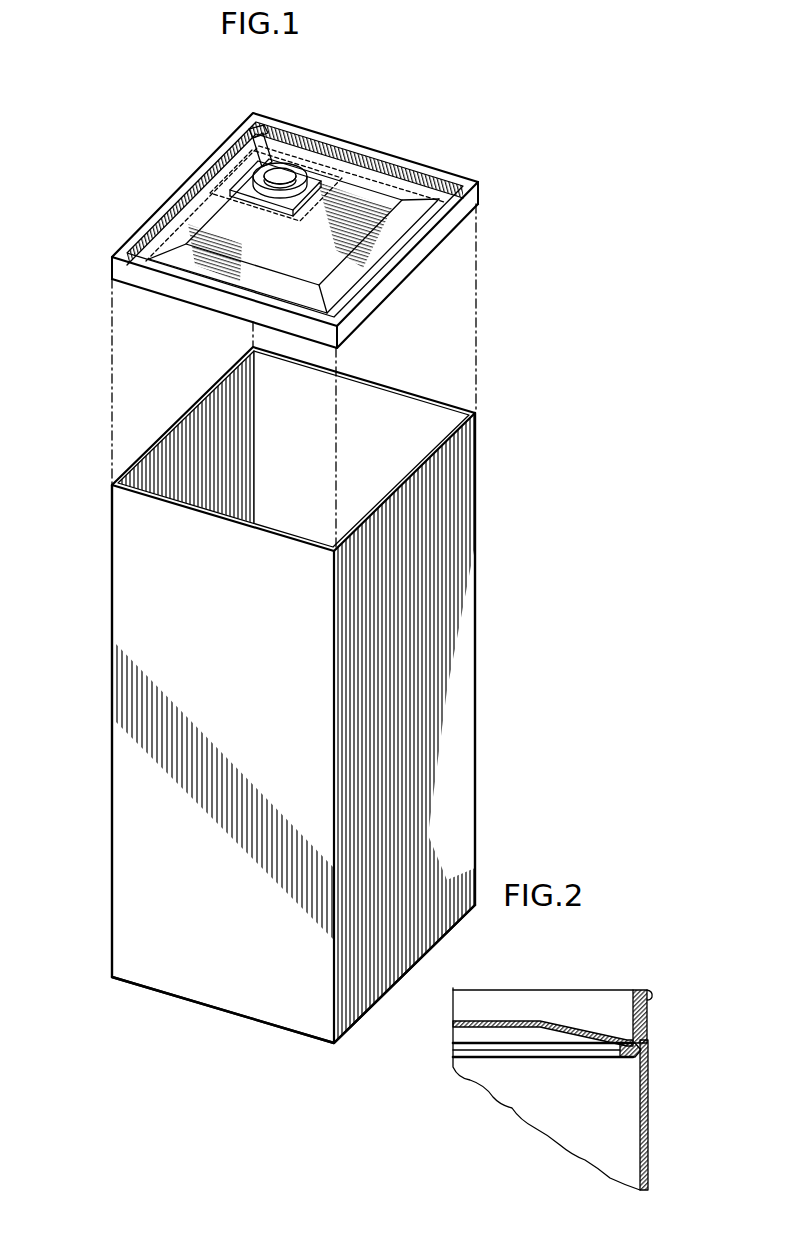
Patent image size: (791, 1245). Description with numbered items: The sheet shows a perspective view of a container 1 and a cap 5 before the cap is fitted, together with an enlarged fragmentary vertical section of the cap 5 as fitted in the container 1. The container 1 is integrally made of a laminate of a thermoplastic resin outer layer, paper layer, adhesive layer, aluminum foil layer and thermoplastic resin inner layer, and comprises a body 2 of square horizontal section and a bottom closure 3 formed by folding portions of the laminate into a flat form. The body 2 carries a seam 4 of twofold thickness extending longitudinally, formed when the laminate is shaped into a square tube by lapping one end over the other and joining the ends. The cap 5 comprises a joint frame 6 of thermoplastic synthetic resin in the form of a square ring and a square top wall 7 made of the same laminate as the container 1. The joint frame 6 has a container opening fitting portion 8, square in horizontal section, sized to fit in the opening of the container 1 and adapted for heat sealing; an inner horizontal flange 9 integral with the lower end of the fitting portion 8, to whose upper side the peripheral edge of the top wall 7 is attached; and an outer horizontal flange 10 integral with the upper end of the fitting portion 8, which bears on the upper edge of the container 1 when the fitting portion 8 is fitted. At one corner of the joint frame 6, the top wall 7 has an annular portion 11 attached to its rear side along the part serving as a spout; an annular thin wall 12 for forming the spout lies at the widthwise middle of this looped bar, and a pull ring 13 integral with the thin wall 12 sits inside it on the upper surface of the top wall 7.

In FIG. 1, the container 1 is at (106, 496).
In FIG. 2, the container 1 is at (650, 1130).
In FIG. 1, the body 2 is at (128, 846).
In FIG. 1, the bottom closure 3 is at (203, 1004).
In FIG. 1, the seam 4 is at (238, 362).
In FIG. 1, the cap 5 is at (163, 191).
In FIG. 2, the cap 5 is at (477, 988).
In FIG. 1, the joint frame 6 is at (432, 168).
In FIG. 2, the joint frame 6 is at (635, 990).
In FIG. 1, the top wall 7 is at (380, 217).
In FIG. 2, the top wall 7 is at (502, 1021).
In FIG. 2, the container opening fitting portion 8 is at (632, 1036).
In FIG. 2, the inner horizontal flange 9 is at (623, 1058).
In FIG. 2, the outer horizontal flange 10 is at (643, 992).
In FIG. 1, the annular portion 11 is at (243, 195).
In FIG. 1, the annular thin wall 12 is at (252, 131).
In FIG. 1, the pull ring 13 is at (300, 168).